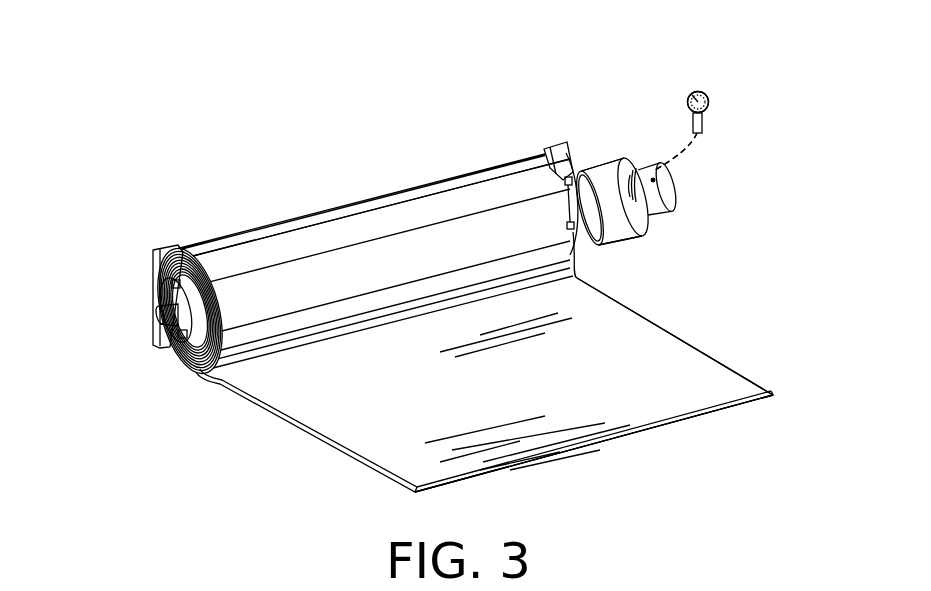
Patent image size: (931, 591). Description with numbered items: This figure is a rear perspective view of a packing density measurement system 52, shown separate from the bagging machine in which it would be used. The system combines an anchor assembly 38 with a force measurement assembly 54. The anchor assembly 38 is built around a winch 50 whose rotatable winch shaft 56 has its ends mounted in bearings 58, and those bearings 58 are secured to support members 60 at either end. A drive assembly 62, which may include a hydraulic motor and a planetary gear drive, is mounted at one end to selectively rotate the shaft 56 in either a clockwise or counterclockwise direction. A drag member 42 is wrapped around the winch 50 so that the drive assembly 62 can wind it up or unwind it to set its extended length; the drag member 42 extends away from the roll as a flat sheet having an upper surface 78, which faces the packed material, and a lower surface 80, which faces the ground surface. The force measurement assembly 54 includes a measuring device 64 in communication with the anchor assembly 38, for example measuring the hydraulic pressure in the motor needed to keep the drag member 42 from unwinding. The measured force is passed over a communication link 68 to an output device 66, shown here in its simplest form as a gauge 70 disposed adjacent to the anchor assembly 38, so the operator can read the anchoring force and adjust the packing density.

The anchor assembly 38 is at (362, 150).
The drag member 42 is at (518, 238).
The winch 50 is at (605, 125).
The packing density measurement system 52 is at (452, 85).
The force measurement assembly 54 is at (663, 88).
The winch shaft 56 is at (163, 322).
The bearings 58 is at (167, 302).
The support members 60 is at (545, 152).
The drive assembly 62 is at (675, 238).
The measuring device 64 is at (673, 186).
The output device 66 is at (705, 80).
The communication link 68 is at (692, 156).
The gauge 70 is at (713, 100).
The upper surface 78 is at (725, 385).
The lower surface 80 is at (575, 455).